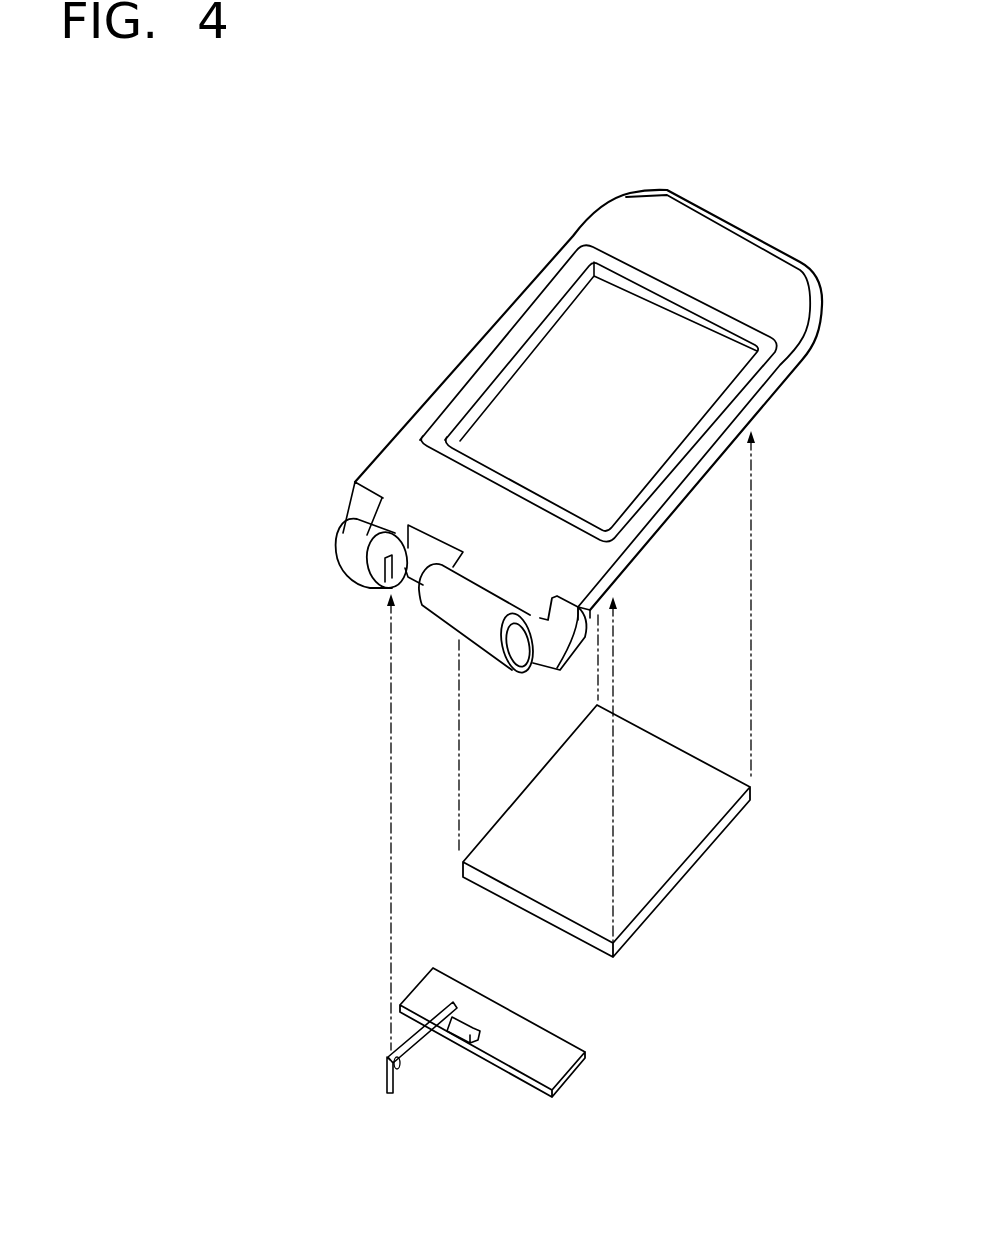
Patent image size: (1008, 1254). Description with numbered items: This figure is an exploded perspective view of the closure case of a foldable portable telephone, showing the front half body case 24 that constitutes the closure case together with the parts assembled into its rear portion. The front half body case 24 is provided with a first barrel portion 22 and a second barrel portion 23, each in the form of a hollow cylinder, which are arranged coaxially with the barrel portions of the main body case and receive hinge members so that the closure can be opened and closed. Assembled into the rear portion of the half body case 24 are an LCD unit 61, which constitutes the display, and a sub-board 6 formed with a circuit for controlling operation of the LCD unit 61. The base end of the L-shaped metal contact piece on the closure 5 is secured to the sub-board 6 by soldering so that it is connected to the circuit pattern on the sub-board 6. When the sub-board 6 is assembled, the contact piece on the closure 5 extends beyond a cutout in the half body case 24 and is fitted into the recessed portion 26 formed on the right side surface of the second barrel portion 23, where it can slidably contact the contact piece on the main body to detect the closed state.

The front half body case 24 is at (623, 225).
The second barrel portion 23 is at (369, 534).
The first barrel portion 22 is at (493, 607).
The recessed portion 26 is at (388, 580).
The LCD unit 61 is at (677, 842).
The sub-board 6 is at (550, 1048).
The contact piece on the closure 5 is at (425, 1043).